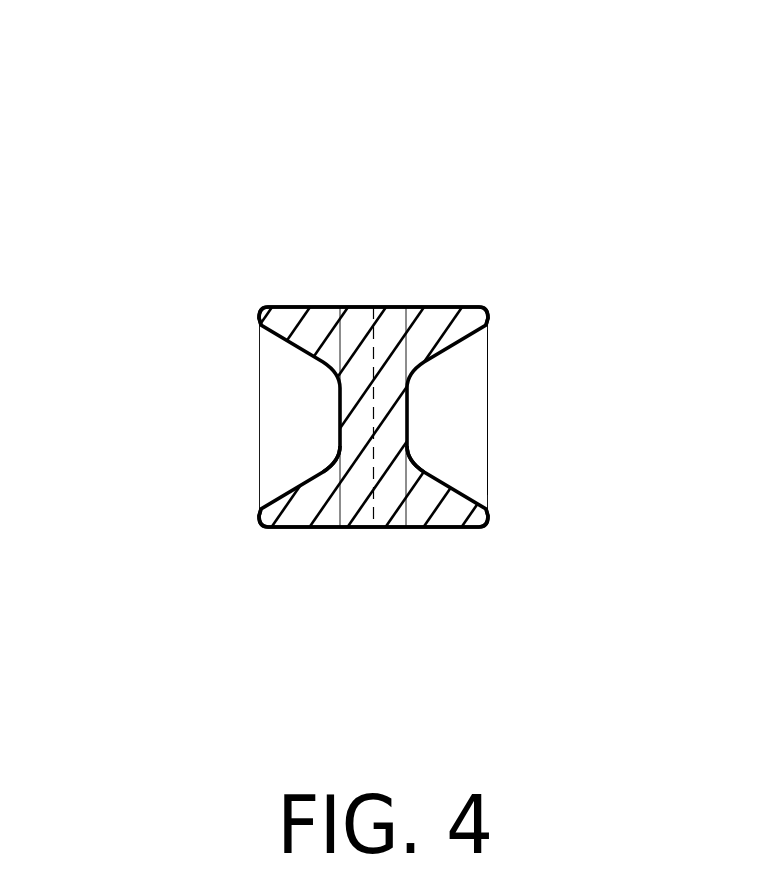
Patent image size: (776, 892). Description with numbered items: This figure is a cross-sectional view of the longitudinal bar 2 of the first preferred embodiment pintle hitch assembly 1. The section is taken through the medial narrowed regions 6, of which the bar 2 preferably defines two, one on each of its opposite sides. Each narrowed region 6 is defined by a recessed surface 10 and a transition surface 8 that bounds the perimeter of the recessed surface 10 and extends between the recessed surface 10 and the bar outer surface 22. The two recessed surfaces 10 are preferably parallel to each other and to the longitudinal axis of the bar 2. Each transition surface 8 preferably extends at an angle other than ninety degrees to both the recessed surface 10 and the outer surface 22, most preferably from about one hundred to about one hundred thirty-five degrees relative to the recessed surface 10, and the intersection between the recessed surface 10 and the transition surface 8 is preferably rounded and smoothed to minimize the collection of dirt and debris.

The pintle hitch assembly 1 is at (431, 345).
The longitudinal bar 2 is at (258, 392).
The medial narrowed region 6 is at (562, 332).
The transition surface 8 is at (292, 347).
The recessed surface 10 is at (340, 434).
The bar outer surface 22 is at (304, 306).